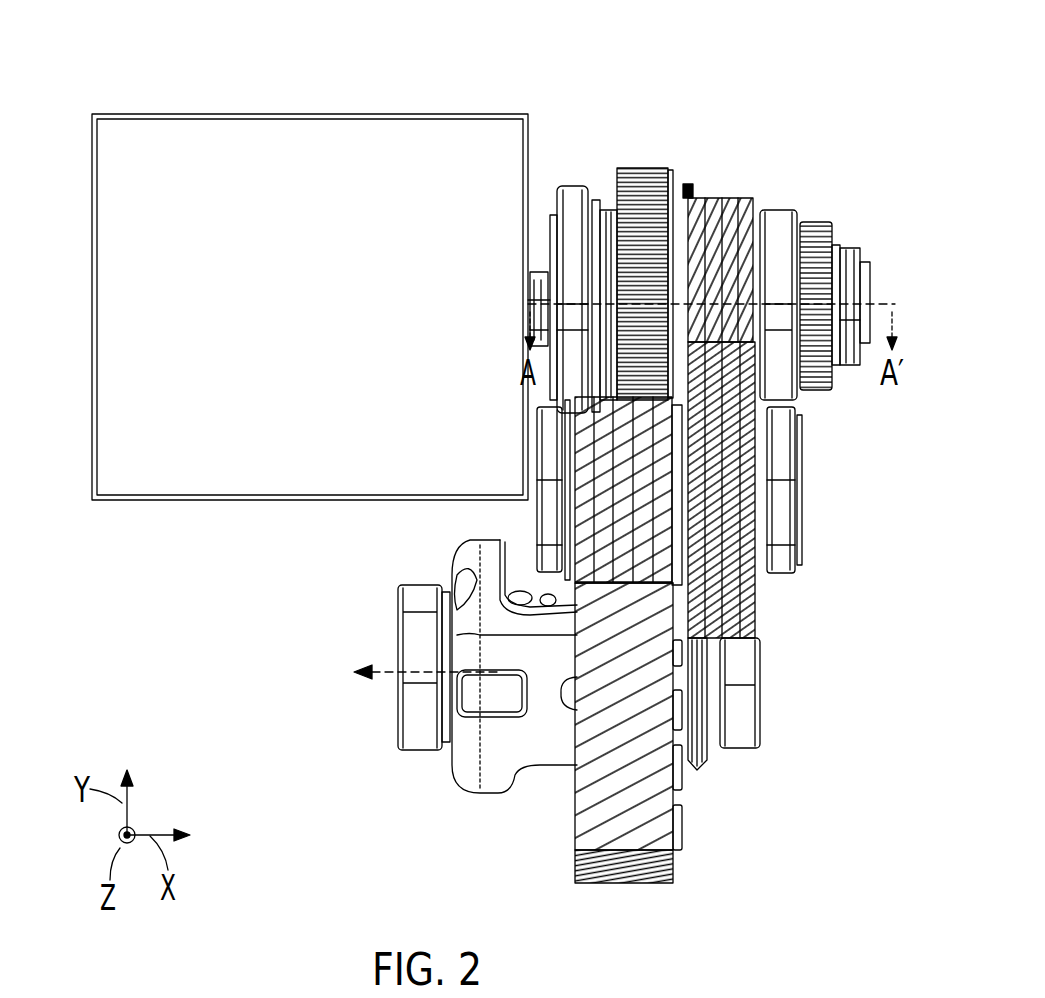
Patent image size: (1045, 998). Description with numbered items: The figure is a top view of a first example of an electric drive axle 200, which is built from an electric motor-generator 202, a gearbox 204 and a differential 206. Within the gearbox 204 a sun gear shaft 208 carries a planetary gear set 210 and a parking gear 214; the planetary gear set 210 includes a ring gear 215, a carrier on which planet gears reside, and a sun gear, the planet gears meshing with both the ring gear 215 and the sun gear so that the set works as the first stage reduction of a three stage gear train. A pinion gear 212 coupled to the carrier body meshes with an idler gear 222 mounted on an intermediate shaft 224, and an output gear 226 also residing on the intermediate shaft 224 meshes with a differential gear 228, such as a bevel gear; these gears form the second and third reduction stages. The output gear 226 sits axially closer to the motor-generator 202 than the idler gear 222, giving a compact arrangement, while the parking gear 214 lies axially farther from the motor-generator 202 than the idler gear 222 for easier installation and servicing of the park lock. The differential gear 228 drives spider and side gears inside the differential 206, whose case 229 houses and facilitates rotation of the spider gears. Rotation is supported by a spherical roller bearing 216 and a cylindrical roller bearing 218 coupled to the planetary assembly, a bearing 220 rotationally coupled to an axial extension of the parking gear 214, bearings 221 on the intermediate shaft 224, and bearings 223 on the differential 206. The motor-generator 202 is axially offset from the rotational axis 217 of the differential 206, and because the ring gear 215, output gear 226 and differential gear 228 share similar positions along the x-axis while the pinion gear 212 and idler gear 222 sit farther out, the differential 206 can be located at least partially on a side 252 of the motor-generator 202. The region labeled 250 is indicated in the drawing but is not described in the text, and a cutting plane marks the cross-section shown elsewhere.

The electric drive axle 200 is at (92, 80).
The electric motor-generator 202 is at (86, 114).
The gearbox 204 is at (895, 155).
The differential 206 is at (382, 562).
The sun gear shaft 208 is at (874, 282).
The planetary gear set 210 is at (671, 135).
The pinion gear 212 is at (722, 197).
The parking gear 214 is at (818, 232).
The ring gear 215 is at (634, 175).
The bearing 216 is at (578, 198).
The rotational axis 217 is at (382, 678).
The bearing 218 is at (778, 212).
The bearing 220 is at (850, 360).
The bearings 221 is at (546, 500).
The idler gear 222 is at (748, 588).
The bearings 223 is at (416, 640).
The intermediate shaft 224 is at (806, 475).
The output gear 226 is at (600, 528).
The differential gear 228 is at (663, 862).
The case 229 is at (470, 780).
The gear train 250 is at (788, 100).
The side 252 is at (243, 516).